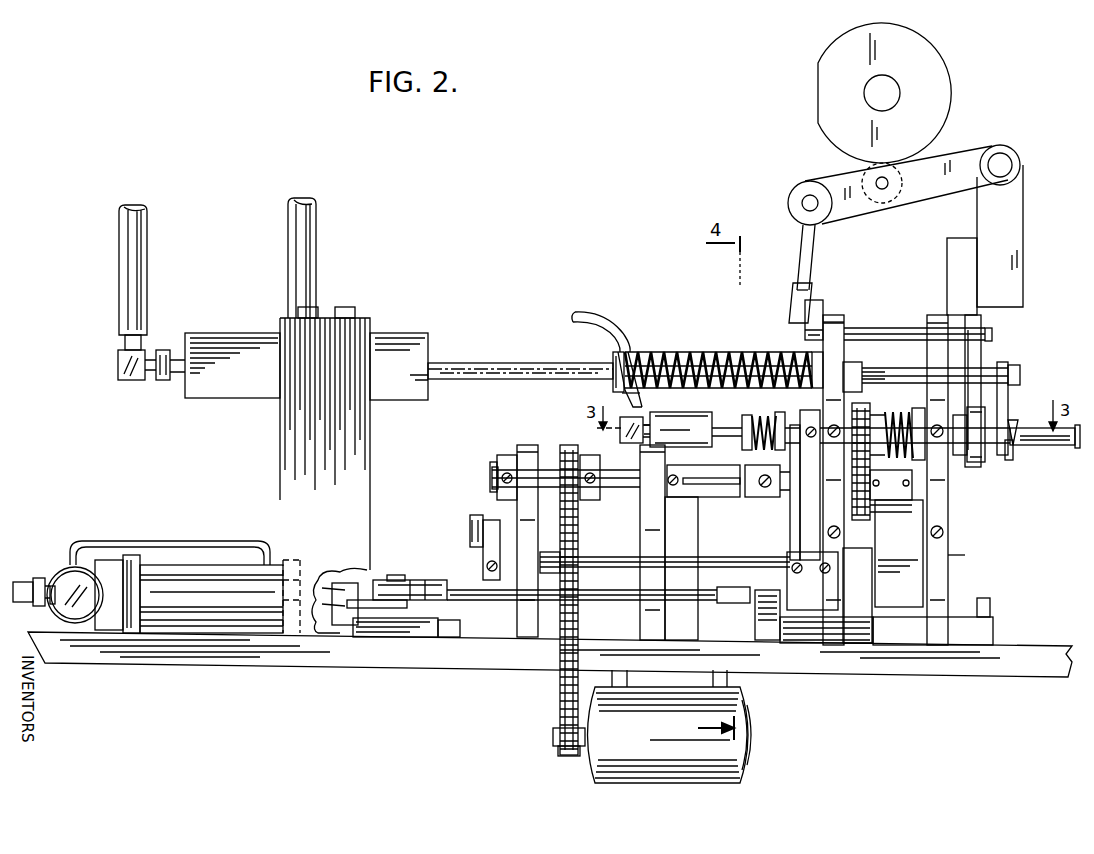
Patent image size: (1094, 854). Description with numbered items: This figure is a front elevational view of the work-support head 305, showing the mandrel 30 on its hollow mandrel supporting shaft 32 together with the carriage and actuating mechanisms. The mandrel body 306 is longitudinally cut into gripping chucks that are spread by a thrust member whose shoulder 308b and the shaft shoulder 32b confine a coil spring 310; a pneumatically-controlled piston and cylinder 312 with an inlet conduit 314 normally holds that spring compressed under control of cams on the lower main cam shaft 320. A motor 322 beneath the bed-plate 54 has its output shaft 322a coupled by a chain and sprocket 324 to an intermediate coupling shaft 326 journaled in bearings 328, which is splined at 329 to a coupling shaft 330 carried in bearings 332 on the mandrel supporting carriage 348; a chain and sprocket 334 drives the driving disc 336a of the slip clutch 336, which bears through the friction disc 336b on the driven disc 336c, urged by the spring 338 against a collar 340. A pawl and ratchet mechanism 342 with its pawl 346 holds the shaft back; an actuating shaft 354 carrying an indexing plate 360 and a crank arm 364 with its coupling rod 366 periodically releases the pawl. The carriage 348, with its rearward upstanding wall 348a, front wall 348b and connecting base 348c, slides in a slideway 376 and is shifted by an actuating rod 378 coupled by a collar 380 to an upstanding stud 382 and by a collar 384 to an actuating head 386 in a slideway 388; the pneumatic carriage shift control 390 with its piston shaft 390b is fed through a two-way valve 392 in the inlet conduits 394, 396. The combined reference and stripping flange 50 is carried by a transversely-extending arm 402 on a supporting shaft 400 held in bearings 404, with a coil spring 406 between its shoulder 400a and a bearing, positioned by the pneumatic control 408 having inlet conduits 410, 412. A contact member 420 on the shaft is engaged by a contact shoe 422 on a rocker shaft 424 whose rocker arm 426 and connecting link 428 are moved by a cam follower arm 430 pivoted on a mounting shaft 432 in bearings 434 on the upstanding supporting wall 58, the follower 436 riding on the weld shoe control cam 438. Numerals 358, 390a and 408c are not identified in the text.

The mandrel 30 is at (1032, 427).
The mandrel supporting shaft 32 is at (1009, 460).
The shoulder 32b is at (786, 447).
The combined reference and stripping flange 50 is at (1016, 446).
The bed-plate 54 is at (116, 664).
The upstanding supporting wall 58 is at (958, 238).
The work-support head 305 is at (1056, 254).
The mandrel body 306 is at (1042, 446).
The shoulder 308b is at (746, 414).
The coil spring 310 is at (776, 414).
The pneumatically-controlled piston and cylinder 312 is at (706, 414).
The inlet conduit 314 is at (590, 318).
The lower main cam shaft 320 is at (530, 443).
The motor 322 is at (752, 752).
The output shaft 322a is at (580, 756).
The chain and sprocket 324 is at (558, 690).
The intermediate coupling shaft 326 is at (626, 490).
The bearings 328 is at (642, 520).
The spline 329 is at (726, 497).
The coupling shaft 330 is at (812, 495).
The bearings 332 is at (948, 518).
The chain and sprocket 334 is at (860, 520).
The slip clutch 336 is at (880, 371).
The driving disc 336a is at (880, 358).
The friction disc 336b is at (886, 410).
The driven disc 336c is at (891, 485).
The spring 338 is at (891, 510).
The collar 340 is at (916, 406).
The pawl and ratchet mechanism 342 is at (780, 360).
The pawl 346 is at (792, 532).
The mandrel supporting carriage 348 is at (838, 313).
The rearward upstanding wall 348a is at (848, 315).
The front wall 348b is at (938, 314).
The connecting base 348c is at (894, 610).
The actuating shaft 354 is at (600, 560).
The base block 358 is at (508, 572).
The indexing plate 360 is at (812, 581).
The crank arm 364 is at (482, 554).
The coupling rod 366 is at (474, 514).
The slideway 376 is at (990, 634).
The actuating rod 378 is at (626, 600).
The collar 380 is at (736, 603).
The upstanding stud 382 is at (758, 622).
The collar 384 is at (386, 578).
The actuating head 386 is at (396, 668).
The slideway 388 is at (444, 665).
The pneumatic carriage shift control 390 is at (210, 565).
The cylinder body 390a is at (212, 590).
The piston shaft 390b is at (324, 592).
The two-way valve 392 is at (66, 560).
The inlet conduit 394 is at (22, 580).
The inlet conduit 396 is at (163, 541).
The supporting shaft 400 is at (985, 368).
The shoulder 400a is at (622, 350).
The transversely-extending arm 402 is at (1010, 398).
The bearings 404 is at (992, 335).
The coil spring 406 is at (676, 350).
The pneumatic control 408 is at (418, 330).
The rod 408c is at (540, 362).
The inlet conduit 410 is at (318, 263).
The inlet conduit 412 is at (147, 288).
The contact member 420 is at (984, 462).
The contact shoe 422 is at (982, 318).
The rocker shaft 424 is at (904, 326).
The rocker arm 426 is at (818, 298).
The connecting link 428 is at (800, 248).
The cam follower arm 430 is at (970, 145).
The mounting shaft 432 is at (1003, 152).
The bearings 434 is at (1023, 197).
The follower 436 is at (862, 166).
The weld shoe control cam 438 is at (948, 82).